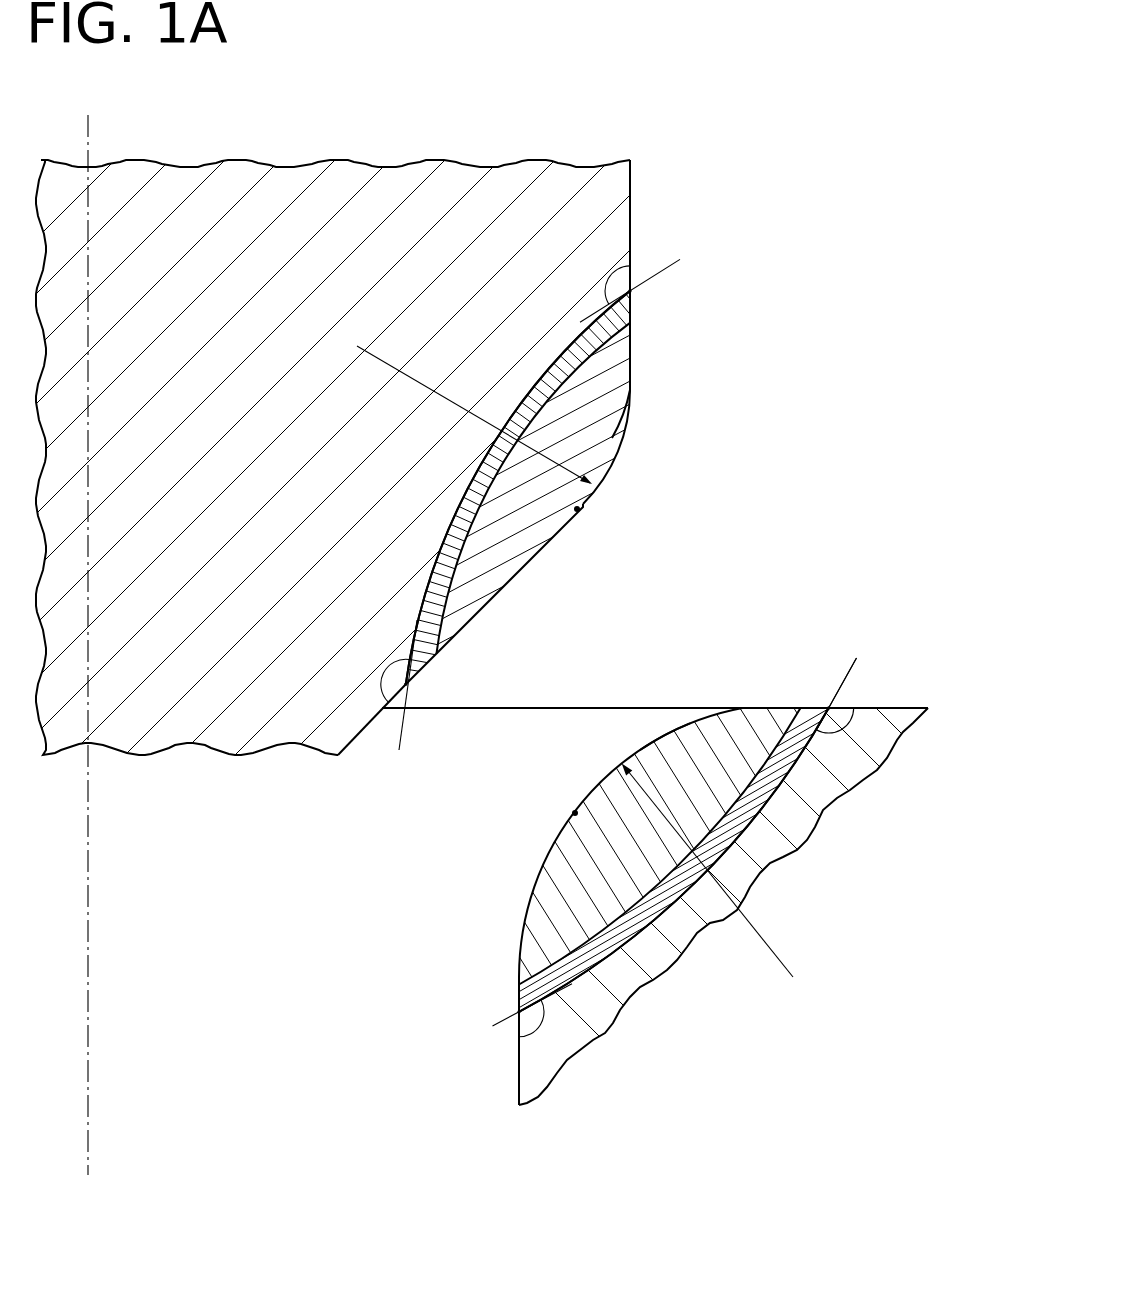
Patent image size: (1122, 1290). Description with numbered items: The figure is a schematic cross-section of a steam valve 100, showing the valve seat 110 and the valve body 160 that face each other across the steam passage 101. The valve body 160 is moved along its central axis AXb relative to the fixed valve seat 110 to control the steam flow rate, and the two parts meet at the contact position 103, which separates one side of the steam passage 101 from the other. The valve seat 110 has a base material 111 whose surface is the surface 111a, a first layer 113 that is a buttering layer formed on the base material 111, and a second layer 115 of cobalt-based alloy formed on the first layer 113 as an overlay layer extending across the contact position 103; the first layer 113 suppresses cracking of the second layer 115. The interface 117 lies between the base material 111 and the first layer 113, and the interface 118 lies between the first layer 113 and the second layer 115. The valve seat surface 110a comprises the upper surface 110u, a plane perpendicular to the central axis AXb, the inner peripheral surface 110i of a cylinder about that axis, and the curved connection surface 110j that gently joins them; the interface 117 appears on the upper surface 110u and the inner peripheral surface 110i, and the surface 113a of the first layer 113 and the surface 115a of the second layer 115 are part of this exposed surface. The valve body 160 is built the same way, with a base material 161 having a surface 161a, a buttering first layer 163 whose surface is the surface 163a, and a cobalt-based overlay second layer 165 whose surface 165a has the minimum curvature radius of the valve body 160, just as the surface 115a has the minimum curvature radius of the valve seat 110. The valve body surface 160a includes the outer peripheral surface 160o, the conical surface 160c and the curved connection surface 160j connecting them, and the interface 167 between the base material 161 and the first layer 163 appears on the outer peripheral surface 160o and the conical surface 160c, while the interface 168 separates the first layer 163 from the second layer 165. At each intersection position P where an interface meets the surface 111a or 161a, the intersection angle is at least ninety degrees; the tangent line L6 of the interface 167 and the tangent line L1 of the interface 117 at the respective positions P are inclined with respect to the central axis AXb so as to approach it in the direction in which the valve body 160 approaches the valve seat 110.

The steam valve 100 is at (826, 258).
The steam passage 101 is at (684, 633).
The contact position 103 is at (579, 510).
The valve seat 110 is at (648, 813).
The valve seat surface 110a is at (648, 813).
The inner peripheral surface 110i is at (517, 1100).
The connection surface 110j is at (655, 743).
The upper surface 110u is at (903, 708).
The base material 111 is at (688, 935).
The surface of the base material 111a is at (918, 708).
The first layer 113 is at (649, 881).
The surface of the first layer 113a is at (811, 706).
The second layer 115 is at (545, 880).
The surface of the second layer 115a is at (558, 835).
The interface 117 is at (748, 838).
The interface 118 is at (530, 918).
The valve body 160 is at (410, 444).
The valve body surface 160a is at (513, 492).
The conical surface 160c is at (398, 748).
The connection surface 160j is at (613, 436).
The outer peripheral surface 160o is at (633, 183).
The base material 161 is at (390, 197).
The surface of the base material 161a is at (633, 217).
The first layer 163 is at (542, 482).
The surface of the first layer 163a is at (633, 313).
The second layer 165 is at (527, 544).
The surface of the second layer 165a is at (630, 399).
The interface 167 is at (460, 495).
The interface 168 is at (462, 592).
The central axis AXb is at (95, 966).
The tangent line L1 is at (845, 684).
The tangent line L6 is at (408, 640).
The intersection position P is at (634, 291).